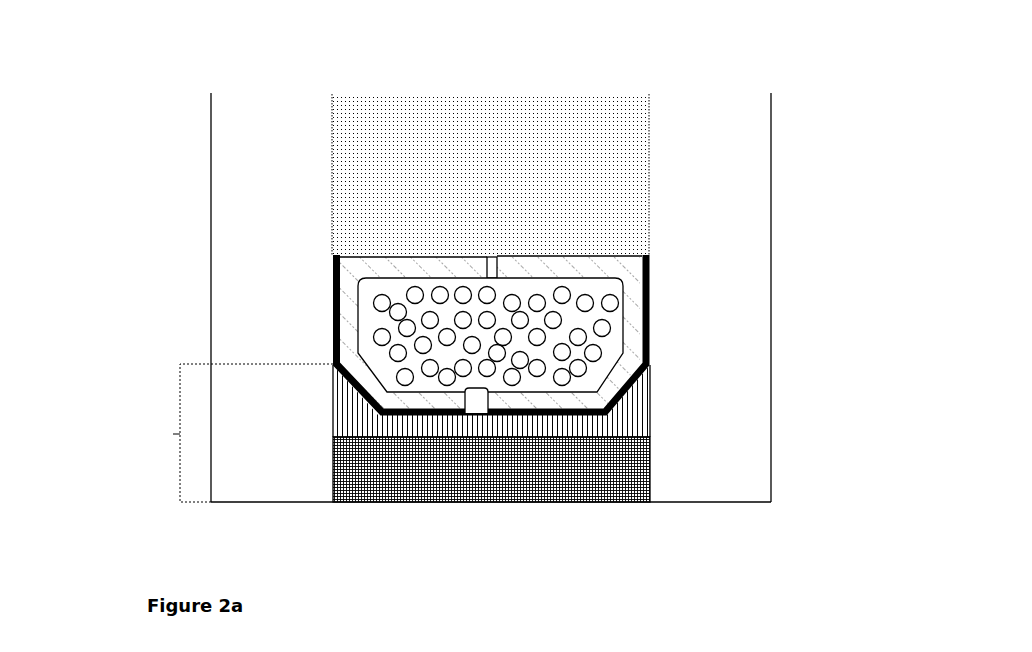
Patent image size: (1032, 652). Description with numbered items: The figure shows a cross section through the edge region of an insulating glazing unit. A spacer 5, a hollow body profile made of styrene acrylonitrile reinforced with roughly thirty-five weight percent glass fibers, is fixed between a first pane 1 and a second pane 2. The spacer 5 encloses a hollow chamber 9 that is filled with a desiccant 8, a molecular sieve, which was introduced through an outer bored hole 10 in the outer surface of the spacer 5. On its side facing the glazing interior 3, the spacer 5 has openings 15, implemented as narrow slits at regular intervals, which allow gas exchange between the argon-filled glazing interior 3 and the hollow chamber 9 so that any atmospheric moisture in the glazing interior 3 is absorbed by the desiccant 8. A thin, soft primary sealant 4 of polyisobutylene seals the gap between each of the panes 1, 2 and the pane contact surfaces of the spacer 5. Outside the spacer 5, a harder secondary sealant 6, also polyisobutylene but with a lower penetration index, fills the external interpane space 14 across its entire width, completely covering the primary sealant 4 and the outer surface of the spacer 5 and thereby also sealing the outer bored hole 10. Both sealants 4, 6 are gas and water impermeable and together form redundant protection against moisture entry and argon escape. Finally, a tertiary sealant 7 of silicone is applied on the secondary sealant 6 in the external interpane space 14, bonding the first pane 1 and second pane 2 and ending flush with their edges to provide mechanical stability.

The first pane 1 is at (713, 148).
The second pane 2 is at (260, 207).
The glazing interior 3 is at (587, 118).
The primary sealant 4 is at (337, 262).
The spacer 5 is at (628, 306).
The secondary sealant 6 is at (630, 430).
The tertiary sealant 7 is at (608, 482).
The desiccant 8 is at (598, 353).
The hollow chamber 9 is at (587, 380).
The outer bored hole 10 is at (648, 405).
The external interpane space 14 is at (236, 433).
The openings 15 is at (487, 262).